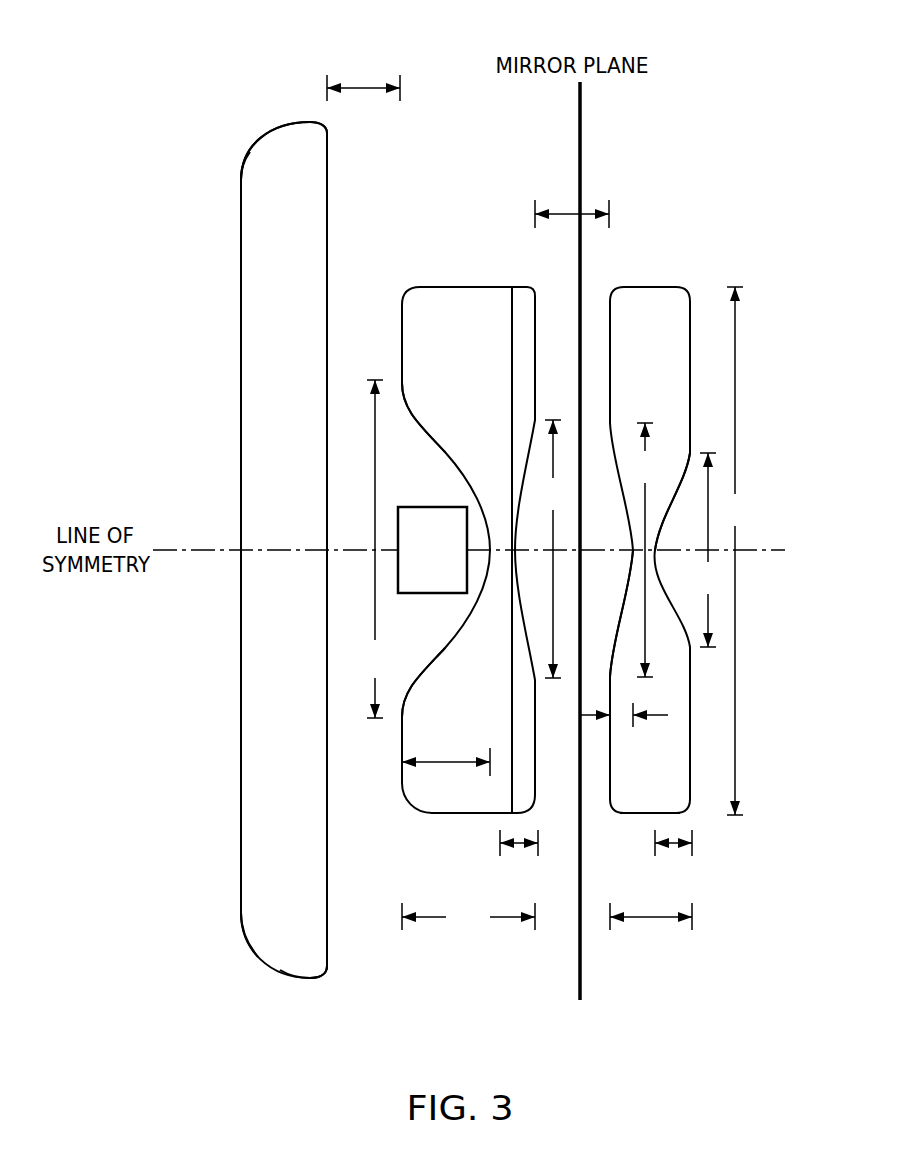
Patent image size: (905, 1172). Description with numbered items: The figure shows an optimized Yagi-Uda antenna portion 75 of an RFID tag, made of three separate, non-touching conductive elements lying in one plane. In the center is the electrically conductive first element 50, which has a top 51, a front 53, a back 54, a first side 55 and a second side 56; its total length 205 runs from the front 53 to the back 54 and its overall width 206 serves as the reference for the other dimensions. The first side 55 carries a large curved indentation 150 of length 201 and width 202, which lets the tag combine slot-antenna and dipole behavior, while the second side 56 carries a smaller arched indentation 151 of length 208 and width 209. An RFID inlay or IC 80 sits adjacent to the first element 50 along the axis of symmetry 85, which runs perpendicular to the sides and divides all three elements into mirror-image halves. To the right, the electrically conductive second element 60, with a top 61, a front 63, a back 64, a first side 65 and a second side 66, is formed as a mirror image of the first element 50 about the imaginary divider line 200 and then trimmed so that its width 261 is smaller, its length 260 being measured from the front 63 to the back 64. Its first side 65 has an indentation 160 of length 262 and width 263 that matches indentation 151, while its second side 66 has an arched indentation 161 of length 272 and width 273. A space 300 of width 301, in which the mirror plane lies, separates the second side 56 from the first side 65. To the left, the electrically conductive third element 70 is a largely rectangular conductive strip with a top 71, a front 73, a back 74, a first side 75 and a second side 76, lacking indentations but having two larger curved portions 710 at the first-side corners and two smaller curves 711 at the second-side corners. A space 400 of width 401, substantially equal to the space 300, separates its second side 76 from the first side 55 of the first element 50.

The electrically conductive first element 50 is at (476, 359).
The top 51 is at (430, 408).
The front 53 is at (477, 813).
The back 54 is at (466, 286).
The first side 55 is at (401, 356).
The second side 56 is at (537, 347).
The electrically conductive second element 60 is at (661, 347).
The top 61 is at (676, 360).
The front 63 is at (638, 813).
The back 64 is at (650, 287).
The first side 65 is at (610, 338).
The second side 66 is at (692, 378).
The electrically conductive third element 70 is at (290, 344).
The top 71 is at (257, 418).
The front 73 is at (320, 978).
The back 74 is at (260, 143).
The first side 75 is at (242, 730).
The second side 76 is at (328, 745).
The RFID inlay or IC 80 is at (452, 507).
The axis of symmetry 85 is at (760, 555).
The curved indentation 150 is at (461, 634).
The indentation 151 is at (514, 510).
The indentation 160 is at (620, 636).
The indentation 161 is at (672, 488).
The imaginary divider line 200 is at (579, 132).
The length 201 is at (375, 549).
The width 202 is at (446, 761).
The total length 205 is at (512, 755).
The overall width 206 is at (468, 916).
The length 208 is at (553, 549).
The width 209 is at (518, 847).
The length 260 is at (735, 551).
The width 261 is at (648, 918).
The length 262 is at (645, 550).
The width 263 is at (650, 717).
The length 272 is at (708, 550).
The width 273 is at (673, 847).
The space 300 is at (610, 295).
The width 301 is at (587, 207).
The space 400 is at (413, 297).
The width 401 is at (357, 86).
The larger curved portions 710 is at (242, 180).
The smaller curves 711 is at (326, 121).